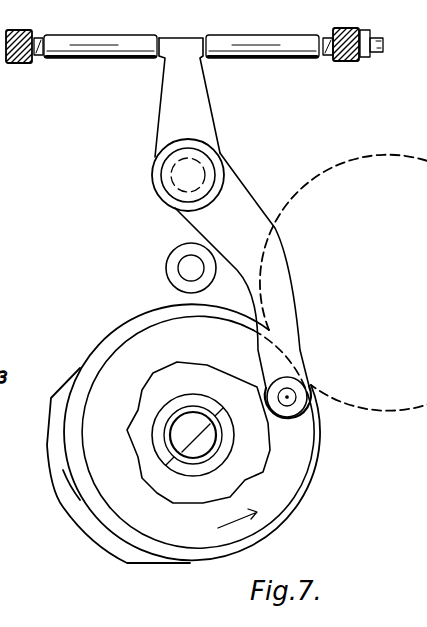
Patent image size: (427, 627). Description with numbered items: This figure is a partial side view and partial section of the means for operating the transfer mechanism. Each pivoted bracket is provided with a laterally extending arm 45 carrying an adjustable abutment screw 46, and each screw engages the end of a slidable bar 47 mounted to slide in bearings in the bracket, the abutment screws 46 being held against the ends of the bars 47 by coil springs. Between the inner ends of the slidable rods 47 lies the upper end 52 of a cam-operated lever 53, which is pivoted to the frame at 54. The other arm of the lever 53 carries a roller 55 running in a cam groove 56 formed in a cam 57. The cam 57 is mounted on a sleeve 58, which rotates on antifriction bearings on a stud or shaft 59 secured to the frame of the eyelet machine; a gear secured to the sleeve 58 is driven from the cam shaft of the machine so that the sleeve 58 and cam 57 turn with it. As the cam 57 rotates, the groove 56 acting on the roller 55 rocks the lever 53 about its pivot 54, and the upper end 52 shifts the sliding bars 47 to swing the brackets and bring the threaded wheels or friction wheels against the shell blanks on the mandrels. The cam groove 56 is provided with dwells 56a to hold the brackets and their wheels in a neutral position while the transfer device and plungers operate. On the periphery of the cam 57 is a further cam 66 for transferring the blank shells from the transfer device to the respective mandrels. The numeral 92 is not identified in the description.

The laterally extending arm 45 is at (20, 63).
The adjustable abutment screw 46 is at (36, 37).
The slidable bar 47 is at (97, 43).
The upper end 52 is at (182, 40).
The cam-operated lever 53 is at (246, 181).
The pivot 54 is at (170, 188).
The roller 55 is at (314, 412).
The cam groove 56 is at (303, 465).
The dwells 56a is at (148, 343).
The cam 57 is at (97, 524).
The sleeve 58 is at (177, 472).
The stud or shaft 59 is at (221, 440).
The cam 66 is at (60, 483).
The element 92 is at (8, 292).